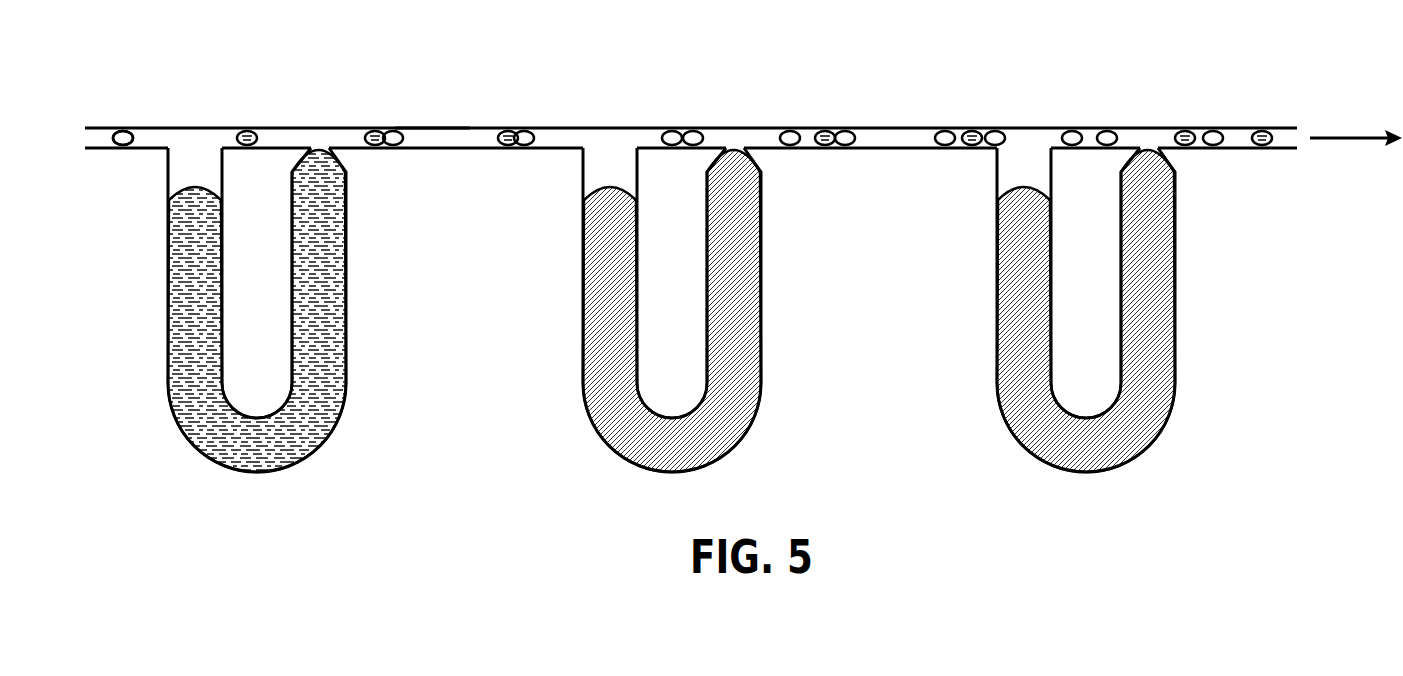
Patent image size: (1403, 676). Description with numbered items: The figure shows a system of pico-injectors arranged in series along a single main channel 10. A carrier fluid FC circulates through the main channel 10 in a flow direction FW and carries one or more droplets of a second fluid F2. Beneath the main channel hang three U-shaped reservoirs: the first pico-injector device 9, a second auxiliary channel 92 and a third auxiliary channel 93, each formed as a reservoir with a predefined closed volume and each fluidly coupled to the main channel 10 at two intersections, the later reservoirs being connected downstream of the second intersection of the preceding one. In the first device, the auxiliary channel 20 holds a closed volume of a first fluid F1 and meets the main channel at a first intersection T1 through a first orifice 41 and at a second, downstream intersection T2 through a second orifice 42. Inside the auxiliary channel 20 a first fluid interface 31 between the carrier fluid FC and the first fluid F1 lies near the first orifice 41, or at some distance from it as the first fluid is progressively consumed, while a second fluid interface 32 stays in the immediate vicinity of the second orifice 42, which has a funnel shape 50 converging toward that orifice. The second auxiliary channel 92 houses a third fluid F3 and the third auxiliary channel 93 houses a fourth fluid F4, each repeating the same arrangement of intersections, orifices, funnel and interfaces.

The main channel 10 is at (878, 128).
The auxiliary channel 20 is at (347, 362).
The pico-injector device 9 is at (317, 321).
The second auxiliary channel 92 is at (740, 321).
The third auxiliary channel 93 is at (1154, 321).
The first fluid interface 31 is at (197, 190).
The second fluid interface 32 is at (328, 150).
The first orifice 41 is at (202, 148).
The second orifice 42 is at (318, 148).
The funnel shape 50 is at (310, 152).
The first intersection T1 is at (185, 140).
The second intersection T2 is at (333, 140).
The first fluid F1 is at (330, 295).
The second fluid F2 is at (123, 132).
The third fluid F3 is at (745, 295).
The fourth fluid F4 is at (1159, 295).
The carrier fluid FC is at (430, 140).
The flow direction FW is at (1356, 153).